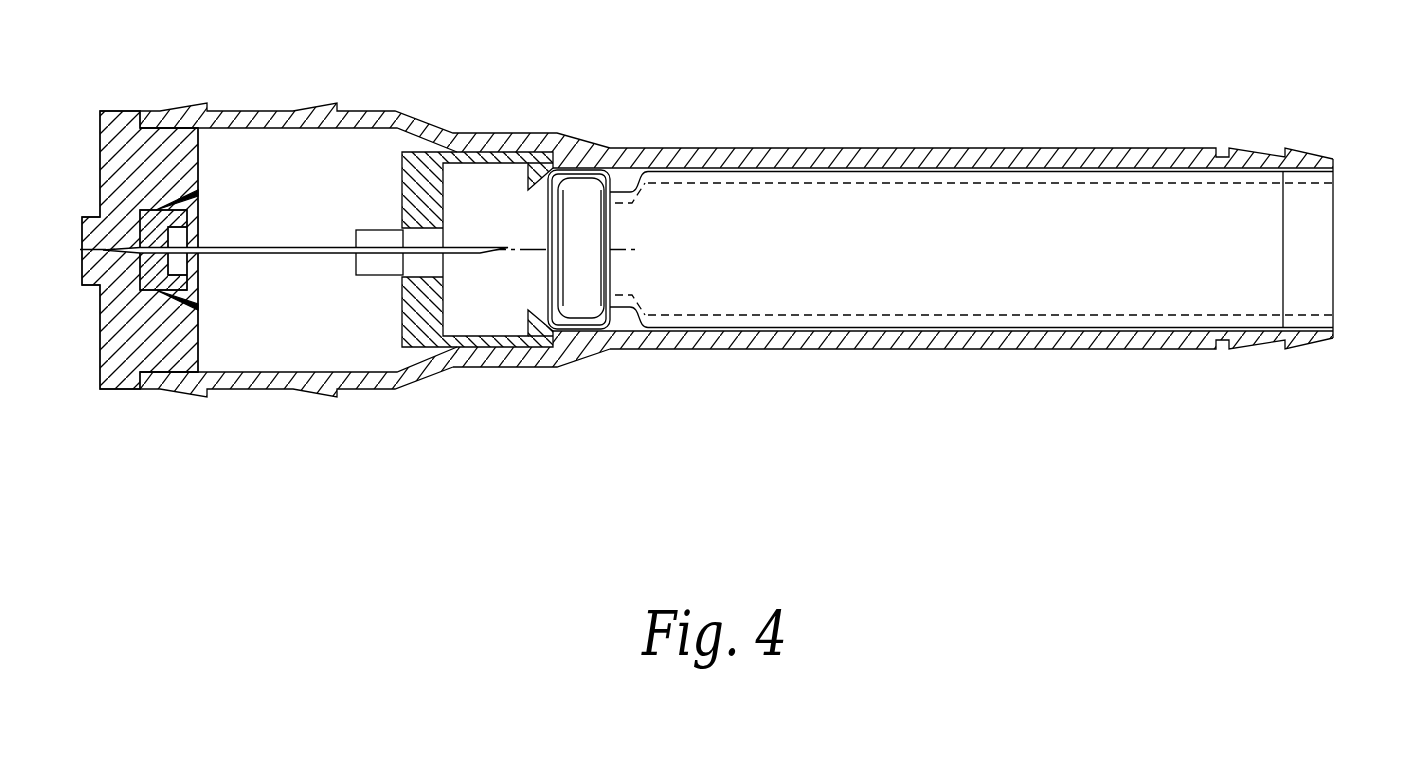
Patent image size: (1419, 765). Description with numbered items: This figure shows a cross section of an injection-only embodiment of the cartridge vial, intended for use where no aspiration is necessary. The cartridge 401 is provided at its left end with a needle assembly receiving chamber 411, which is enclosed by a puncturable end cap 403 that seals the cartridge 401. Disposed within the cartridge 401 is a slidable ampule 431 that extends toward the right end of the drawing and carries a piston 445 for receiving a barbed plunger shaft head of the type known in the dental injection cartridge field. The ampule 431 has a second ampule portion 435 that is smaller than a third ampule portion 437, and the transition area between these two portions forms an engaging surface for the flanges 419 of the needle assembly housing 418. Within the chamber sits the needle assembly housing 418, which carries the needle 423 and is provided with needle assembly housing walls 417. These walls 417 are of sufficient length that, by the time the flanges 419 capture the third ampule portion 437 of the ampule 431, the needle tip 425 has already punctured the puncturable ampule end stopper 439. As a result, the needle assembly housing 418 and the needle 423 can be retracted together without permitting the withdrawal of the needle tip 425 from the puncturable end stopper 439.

The cartridge 401 is at (793, 148).
The puncturable end cap 403 is at (100, 330).
The needle assembly receiving chamber 411 is at (273, 168).
The needle assembly housing walls 417 is at (497, 364).
The needle assembly housing 418 is at (403, 320).
The flanges 419 is at (533, 165).
The needle 423 is at (273, 252).
The needle tip 425 is at (508, 250).
The slidable ampule 431 is at (943, 349).
The second ampule portion 435 is at (617, 310).
The third ampule portion 437 is at (586, 172).
The puncturable ampule end stopper 439 is at (545, 228).
The piston 445 is at (1318, 225).